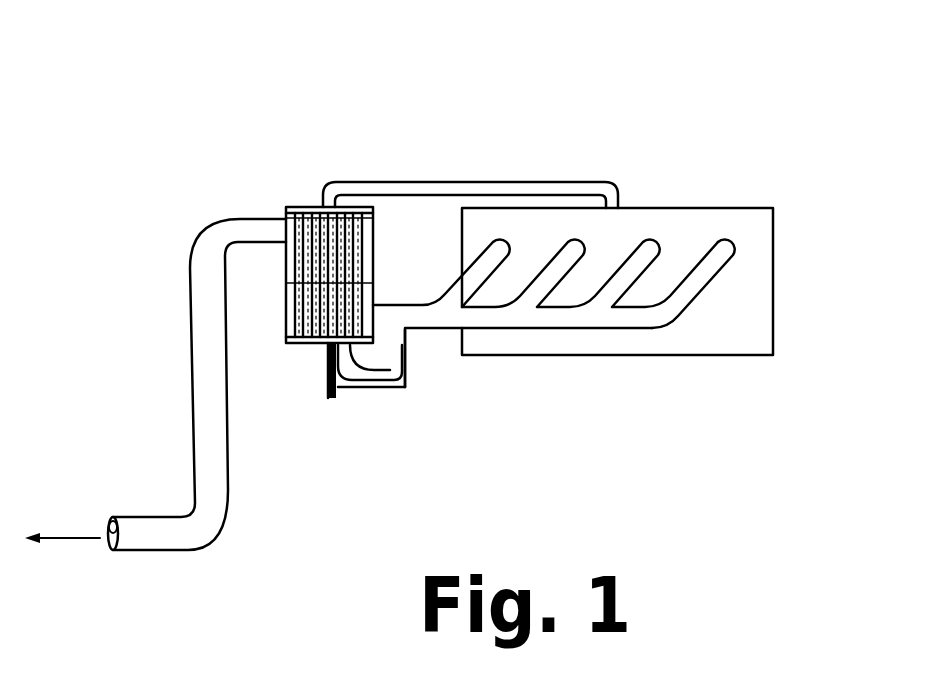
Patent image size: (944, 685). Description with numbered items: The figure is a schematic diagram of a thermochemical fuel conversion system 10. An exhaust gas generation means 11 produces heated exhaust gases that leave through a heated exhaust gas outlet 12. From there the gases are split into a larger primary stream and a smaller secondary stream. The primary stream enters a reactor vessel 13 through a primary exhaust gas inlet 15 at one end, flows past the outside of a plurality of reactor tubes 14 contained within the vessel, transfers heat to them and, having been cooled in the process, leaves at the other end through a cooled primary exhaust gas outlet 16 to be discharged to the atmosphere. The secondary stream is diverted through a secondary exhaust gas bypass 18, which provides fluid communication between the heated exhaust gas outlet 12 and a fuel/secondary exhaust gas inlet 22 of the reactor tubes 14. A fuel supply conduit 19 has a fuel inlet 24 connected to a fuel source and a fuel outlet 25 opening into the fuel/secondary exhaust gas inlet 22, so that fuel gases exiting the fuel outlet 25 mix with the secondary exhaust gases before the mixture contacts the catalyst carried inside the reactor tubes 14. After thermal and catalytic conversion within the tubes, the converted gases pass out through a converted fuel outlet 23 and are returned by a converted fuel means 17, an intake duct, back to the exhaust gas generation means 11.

The fuel conversion system 10 is at (690, 102).
The exhaust gas generation means 11 is at (690, 208).
The heated exhaust gas outlet 12 is at (742, 250).
The reactor vessel 13 is at (287, 310).
The reactor tubes 14 is at (285, 345).
The primary exhaust gas inlet 15 is at (405, 387).
The cooled primary exhaust gas outlet 16 is at (282, 213).
The converted fuel means 17 is at (481, 180).
The secondary exhaust gas bypass 18 is at (406, 356).
The fuel supply conduit 19 is at (327, 402).
The fuel/secondary exhaust gas inlet 22 is at (383, 381).
The converted fuel outlet 23 is at (308, 208).
The fuel inlet 24 is at (334, 400).
The fuel outlet 25 is at (355, 378).